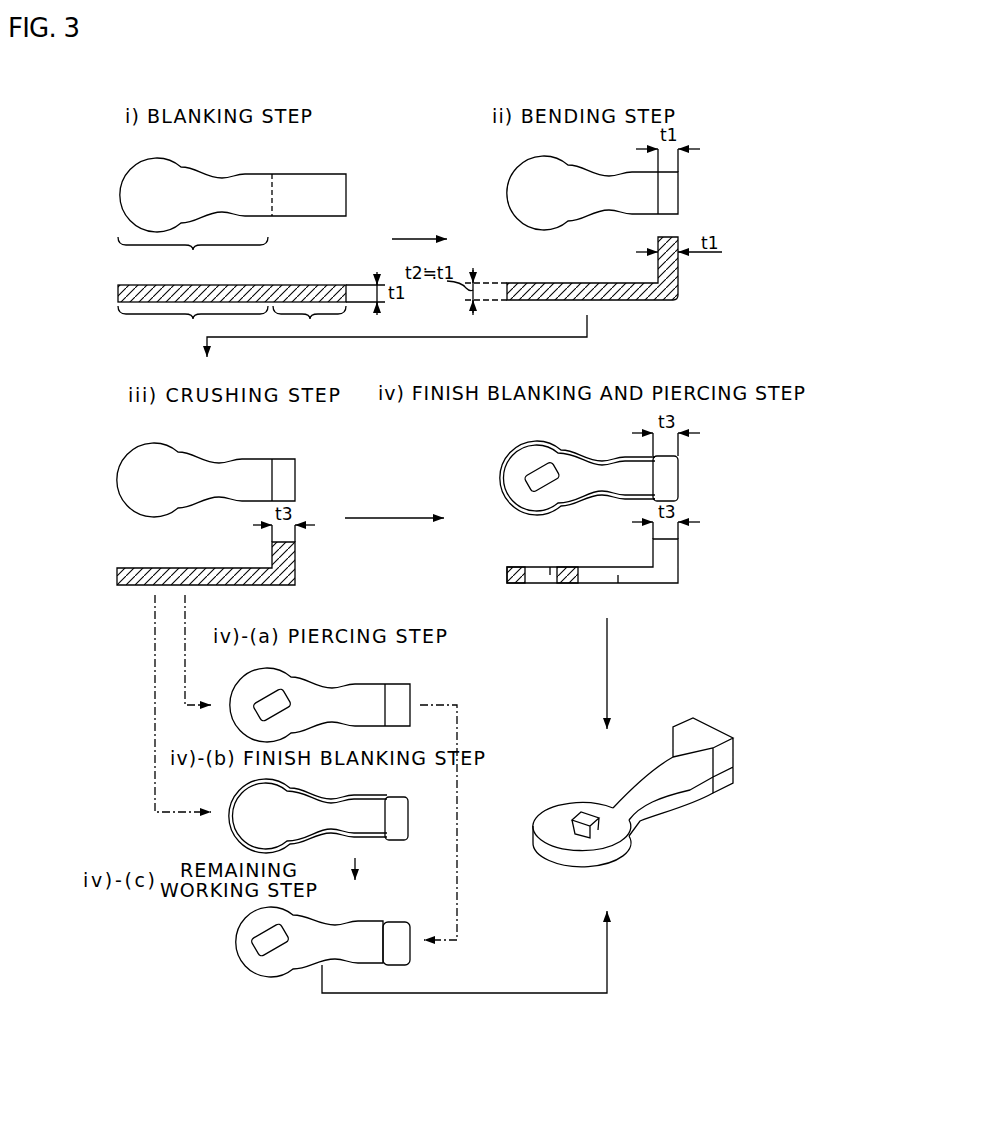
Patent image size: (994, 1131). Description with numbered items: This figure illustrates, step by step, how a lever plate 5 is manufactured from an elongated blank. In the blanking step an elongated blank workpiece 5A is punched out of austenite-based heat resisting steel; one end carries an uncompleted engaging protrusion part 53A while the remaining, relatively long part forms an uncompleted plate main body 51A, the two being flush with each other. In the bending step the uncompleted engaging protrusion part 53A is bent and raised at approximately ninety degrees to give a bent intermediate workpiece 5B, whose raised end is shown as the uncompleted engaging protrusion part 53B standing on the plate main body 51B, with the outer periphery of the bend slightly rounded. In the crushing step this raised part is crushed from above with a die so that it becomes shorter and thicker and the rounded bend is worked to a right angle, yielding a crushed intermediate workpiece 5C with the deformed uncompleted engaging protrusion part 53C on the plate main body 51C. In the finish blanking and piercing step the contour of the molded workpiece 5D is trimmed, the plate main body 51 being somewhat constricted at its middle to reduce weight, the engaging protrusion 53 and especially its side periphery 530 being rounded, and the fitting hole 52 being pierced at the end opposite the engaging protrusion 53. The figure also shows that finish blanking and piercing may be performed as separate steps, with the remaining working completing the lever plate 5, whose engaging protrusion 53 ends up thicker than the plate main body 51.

The lever plate 5 is at (608, 435).
The blank workpiece 5A is at (147, 203).
The bent intermediate workpiece 5B is at (534, 202).
The crushed intermediate workpiece 5C is at (141, 488).
The molded workpiece 5D is at (550, 500).
The plate main body 51 is at (612, 487).
The uncompleted plate main body 51A is at (193, 288).
The plate main body in bending step 51B is at (538, 223).
The plate main body in crushing step 51C is at (182, 457).
The fitting hole 52 is at (538, 473).
The engaging protrusion 53 is at (675, 480).
The uncompleted engaging protrusion part 53A is at (300, 187).
The uncompleted engaging protrusion part 53B is at (678, 263).
The uncompleted engaging protrusion part 53C is at (287, 482).
The side periphery 530 is at (672, 455).